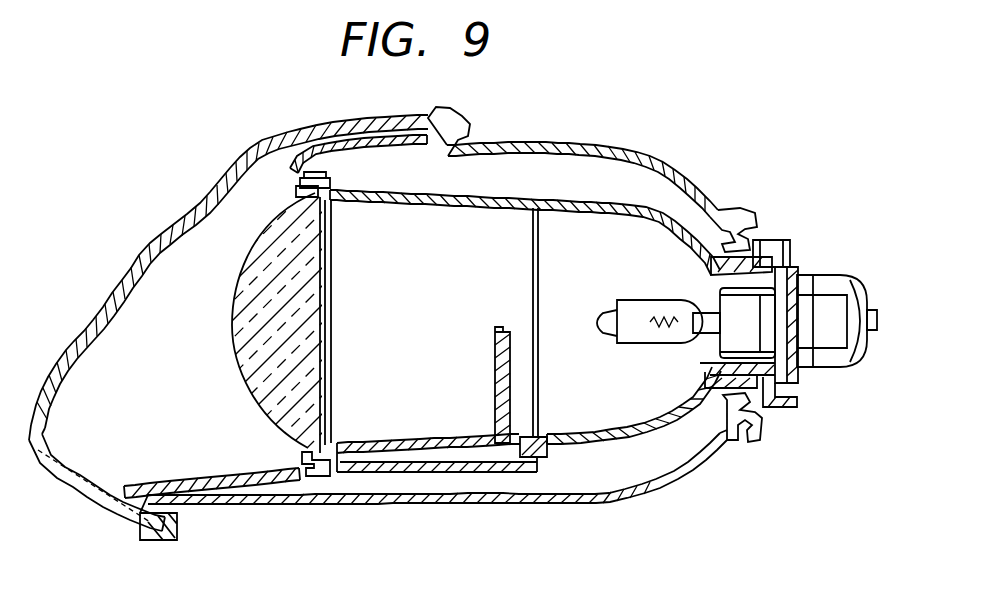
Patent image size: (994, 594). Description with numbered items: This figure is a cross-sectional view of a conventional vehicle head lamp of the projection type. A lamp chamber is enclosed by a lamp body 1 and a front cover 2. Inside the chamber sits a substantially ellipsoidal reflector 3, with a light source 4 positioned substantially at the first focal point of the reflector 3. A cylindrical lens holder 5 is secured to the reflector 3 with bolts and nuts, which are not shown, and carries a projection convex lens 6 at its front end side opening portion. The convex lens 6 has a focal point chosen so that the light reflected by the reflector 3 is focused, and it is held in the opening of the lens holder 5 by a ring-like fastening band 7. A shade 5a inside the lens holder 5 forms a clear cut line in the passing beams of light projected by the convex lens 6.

The lamp body 1 is at (631, 148).
The front cover 2 is at (240, 168).
The reflector 3 is at (637, 447).
The light source 4 is at (657, 300).
The lens holder 5 is at (491, 195).
The shade 5a is at (497, 382).
The convex lens 6 is at (248, 262).
The fastening band 7 is at (322, 478).